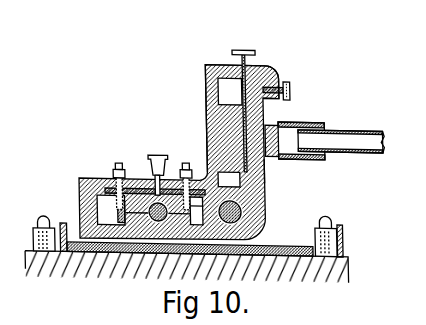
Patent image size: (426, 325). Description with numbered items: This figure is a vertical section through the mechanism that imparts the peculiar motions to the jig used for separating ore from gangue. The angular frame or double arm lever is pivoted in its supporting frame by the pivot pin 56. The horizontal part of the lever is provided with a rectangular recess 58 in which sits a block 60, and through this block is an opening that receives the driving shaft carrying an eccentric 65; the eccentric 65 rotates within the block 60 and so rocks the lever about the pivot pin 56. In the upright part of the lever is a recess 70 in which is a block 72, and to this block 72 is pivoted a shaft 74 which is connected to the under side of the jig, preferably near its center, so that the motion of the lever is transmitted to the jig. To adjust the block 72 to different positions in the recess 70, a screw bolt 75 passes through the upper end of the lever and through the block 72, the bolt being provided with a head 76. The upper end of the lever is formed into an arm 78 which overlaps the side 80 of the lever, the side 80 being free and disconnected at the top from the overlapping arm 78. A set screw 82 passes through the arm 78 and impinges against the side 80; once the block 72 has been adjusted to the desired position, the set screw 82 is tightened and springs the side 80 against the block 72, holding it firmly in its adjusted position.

The pivot pin 56 is at (252, 208).
The rectangular recess 58 is at (107, 211).
The block 60 is at (136, 226).
The eccentric 65 is at (161, 221).
The recess 70 is at (232, 90).
The block 72 is at (209, 109).
The shaft 74 is at (337, 138).
The screw bolt 75 is at (266, 71).
The head 76 is at (248, 51).
The arm 78 is at (284, 96).
The side 80 is at (266, 168).
The set screw 82 is at (293, 88).